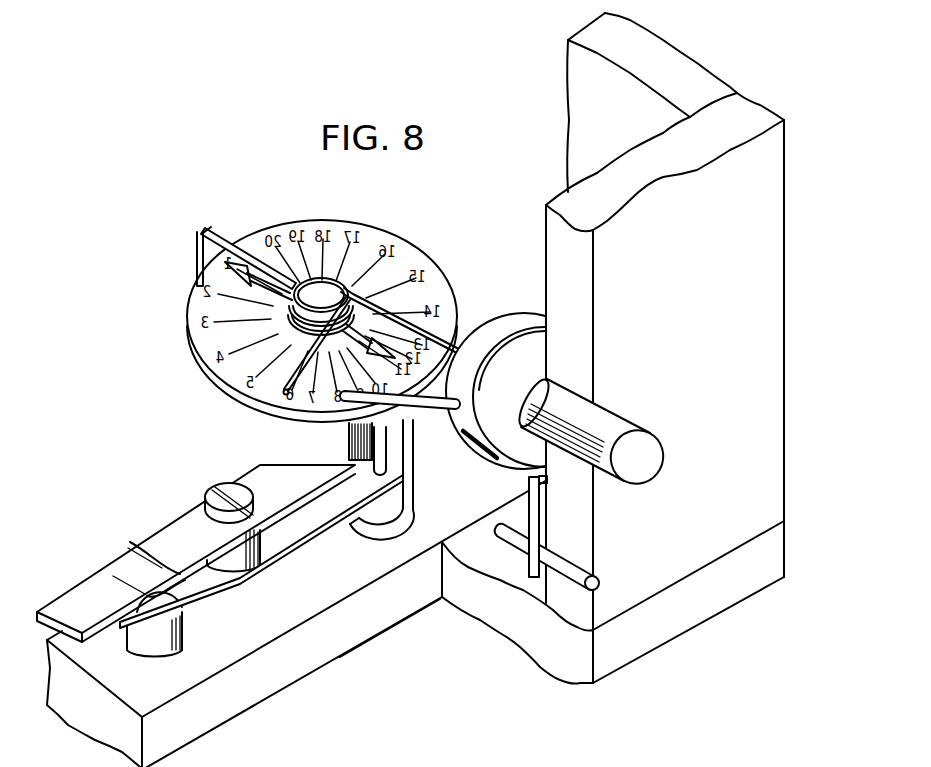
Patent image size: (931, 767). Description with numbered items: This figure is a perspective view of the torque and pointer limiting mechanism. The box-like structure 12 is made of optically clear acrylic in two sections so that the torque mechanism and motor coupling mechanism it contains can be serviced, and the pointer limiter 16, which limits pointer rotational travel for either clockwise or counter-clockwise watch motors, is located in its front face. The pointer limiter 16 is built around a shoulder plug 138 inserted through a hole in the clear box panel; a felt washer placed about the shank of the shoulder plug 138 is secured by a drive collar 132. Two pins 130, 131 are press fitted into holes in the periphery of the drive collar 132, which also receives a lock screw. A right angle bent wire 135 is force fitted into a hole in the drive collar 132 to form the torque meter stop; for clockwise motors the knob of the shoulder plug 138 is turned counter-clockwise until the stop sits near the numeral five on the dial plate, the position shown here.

The box-like structure 12 is at (790, 398).
The pointer limiter 16 is at (505, 308).
The pin 130 is at (345, 421).
The pin 131 is at (528, 568).
The drive collar 132 is at (465, 433).
The right angle bent wire 135 is at (356, 295).
The shoulder plug 138 is at (620, 416).